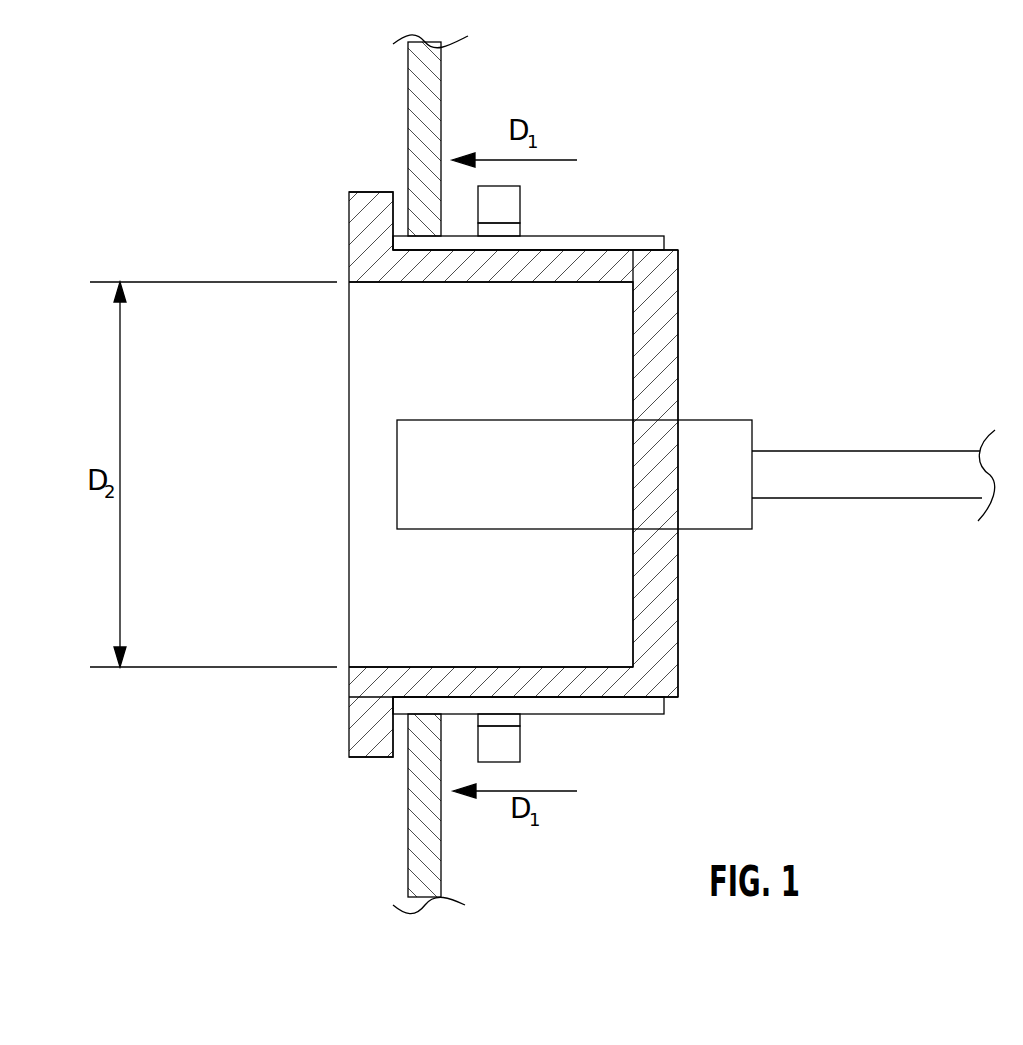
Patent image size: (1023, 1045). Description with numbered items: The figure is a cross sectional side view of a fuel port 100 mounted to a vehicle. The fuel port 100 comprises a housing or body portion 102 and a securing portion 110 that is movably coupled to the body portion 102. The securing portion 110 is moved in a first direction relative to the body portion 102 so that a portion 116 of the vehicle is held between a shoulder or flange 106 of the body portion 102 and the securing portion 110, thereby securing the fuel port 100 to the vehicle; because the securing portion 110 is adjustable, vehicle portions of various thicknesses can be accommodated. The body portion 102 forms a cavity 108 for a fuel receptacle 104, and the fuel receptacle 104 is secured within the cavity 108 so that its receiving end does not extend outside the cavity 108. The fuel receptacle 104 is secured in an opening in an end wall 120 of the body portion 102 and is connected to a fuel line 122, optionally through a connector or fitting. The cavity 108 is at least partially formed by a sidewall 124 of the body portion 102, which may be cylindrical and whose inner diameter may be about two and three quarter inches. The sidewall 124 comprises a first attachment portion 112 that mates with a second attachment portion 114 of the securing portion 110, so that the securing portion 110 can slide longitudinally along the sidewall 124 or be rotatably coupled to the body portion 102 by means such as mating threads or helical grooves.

The fuel port 100 is at (835, 232).
The body portion 102 is at (695, 328).
The fuel receptacle 104 is at (457, 515).
The flange 106 is at (360, 214).
The cavity 108 is at (425, 374).
The securing portion 110 is at (510, 203).
The first attachment portion 112 is at (663, 244).
The second attachment portion 114 is at (508, 230).
The portion of the vehicle 116 is at (413, 88).
The end wall 120 is at (657, 393).
The fuel line 122 is at (848, 479).
The sidewall 124 is at (472, 270).